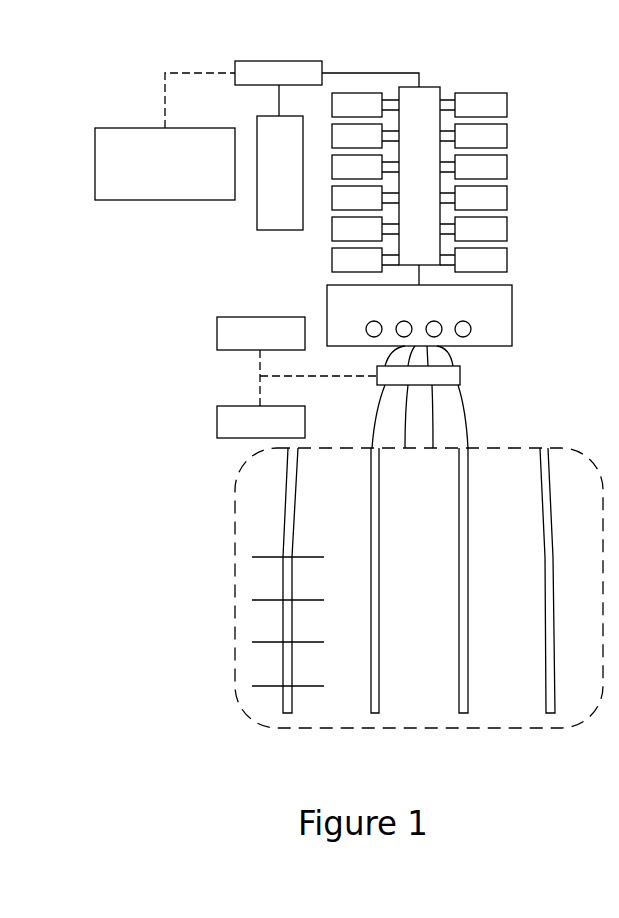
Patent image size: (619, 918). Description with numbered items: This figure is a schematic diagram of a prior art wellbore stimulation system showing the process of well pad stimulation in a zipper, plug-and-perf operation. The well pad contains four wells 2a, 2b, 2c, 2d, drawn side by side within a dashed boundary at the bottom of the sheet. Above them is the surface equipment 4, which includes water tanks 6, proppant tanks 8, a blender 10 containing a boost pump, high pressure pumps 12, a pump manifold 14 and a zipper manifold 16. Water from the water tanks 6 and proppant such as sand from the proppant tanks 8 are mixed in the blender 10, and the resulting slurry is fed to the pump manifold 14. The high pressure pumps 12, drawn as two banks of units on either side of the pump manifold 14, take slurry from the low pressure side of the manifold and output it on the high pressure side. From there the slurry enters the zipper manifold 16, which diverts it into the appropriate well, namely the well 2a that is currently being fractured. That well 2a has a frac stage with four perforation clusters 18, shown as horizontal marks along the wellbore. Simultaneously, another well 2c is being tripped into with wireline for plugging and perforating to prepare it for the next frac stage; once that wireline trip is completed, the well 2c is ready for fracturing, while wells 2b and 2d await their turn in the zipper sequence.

The surface equipment 4 is at (138, 75).
The water tanks 6 is at (113, 128).
The proppant tanks 8 is at (256, 220).
The blender 10 is at (248, 61).
The high pressure pumps 12 is at (508, 102).
The pump manifold 14 is at (430, 87).
The zipper manifold 16 is at (512, 328).
The perforation clusters 18 is at (293, 556).
The well 2a is at (282, 706).
The well 2b is at (370, 706).
The well 2c is at (459, 706).
The well 2d is at (545, 706).